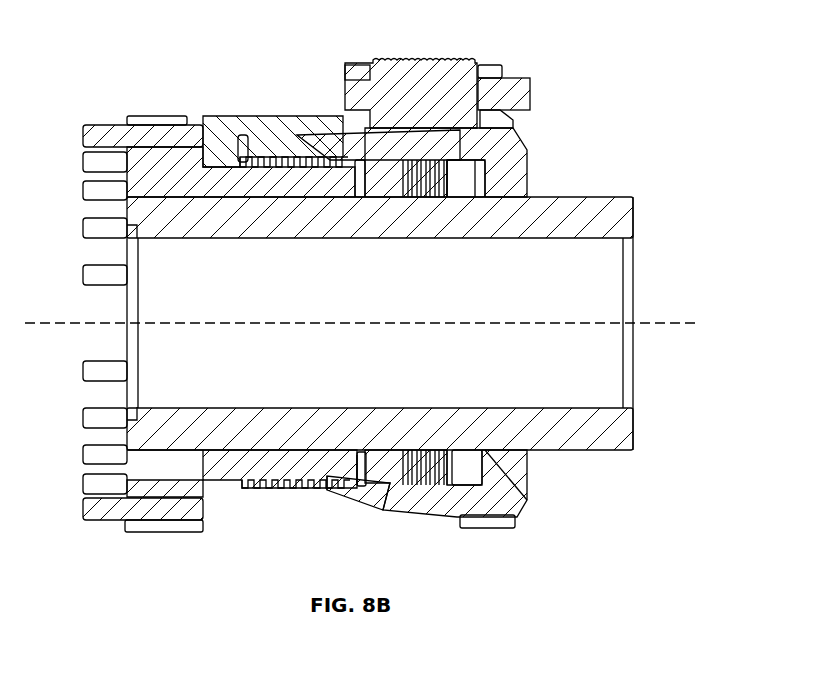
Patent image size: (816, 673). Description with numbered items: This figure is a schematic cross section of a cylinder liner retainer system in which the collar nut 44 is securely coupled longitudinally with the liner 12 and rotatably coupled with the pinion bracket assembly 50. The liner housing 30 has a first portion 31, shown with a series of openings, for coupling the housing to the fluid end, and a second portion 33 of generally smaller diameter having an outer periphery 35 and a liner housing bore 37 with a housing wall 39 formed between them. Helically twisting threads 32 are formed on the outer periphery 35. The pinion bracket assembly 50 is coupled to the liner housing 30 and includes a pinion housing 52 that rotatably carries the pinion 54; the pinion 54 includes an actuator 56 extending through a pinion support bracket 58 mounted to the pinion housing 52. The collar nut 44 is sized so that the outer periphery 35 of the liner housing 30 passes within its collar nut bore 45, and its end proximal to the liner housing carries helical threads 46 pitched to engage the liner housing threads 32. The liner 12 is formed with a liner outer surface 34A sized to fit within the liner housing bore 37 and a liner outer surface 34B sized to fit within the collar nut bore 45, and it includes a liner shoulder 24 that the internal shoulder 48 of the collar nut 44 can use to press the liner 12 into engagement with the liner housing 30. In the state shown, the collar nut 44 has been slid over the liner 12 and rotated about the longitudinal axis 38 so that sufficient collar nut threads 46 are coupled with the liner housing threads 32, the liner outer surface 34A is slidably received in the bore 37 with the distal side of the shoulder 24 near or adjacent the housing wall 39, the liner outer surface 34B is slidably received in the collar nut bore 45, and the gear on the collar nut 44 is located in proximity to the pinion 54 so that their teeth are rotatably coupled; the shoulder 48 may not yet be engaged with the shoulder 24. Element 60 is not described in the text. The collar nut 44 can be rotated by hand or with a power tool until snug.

The liner 12 is at (622, 213).
The liner shoulder 24 is at (420, 198).
The liner housing 30 is at (155, 107).
The first portion 31 is at (150, 533).
The helically twisting threads 32 is at (345, 492).
The second portion 33 is at (240, 492).
The liner outer surface 34A is at (320, 150).
The liner outer surface 34B is at (545, 197).
The outer periphery 35 is at (270, 490).
The liner housing bore 37 is at (362, 198).
The longitudinal axis 38 is at (684, 313).
The housing wall 39 is at (377, 167).
The collar nut 44 is at (430, 512).
The collar nut bore 45 is at (483, 178).
The helical threads 46 is at (347, 473).
The shoulder 48 is at (465, 180).
The pinion bracket assembly 50 is at (262, 116).
The pinion housing 52 is at (352, 70).
The pinion 54 is at (443, 62).
The actuator 56 is at (531, 95).
The pinion support bracket 58 is at (497, 64).
The shoulder 60 is at (583, 197).